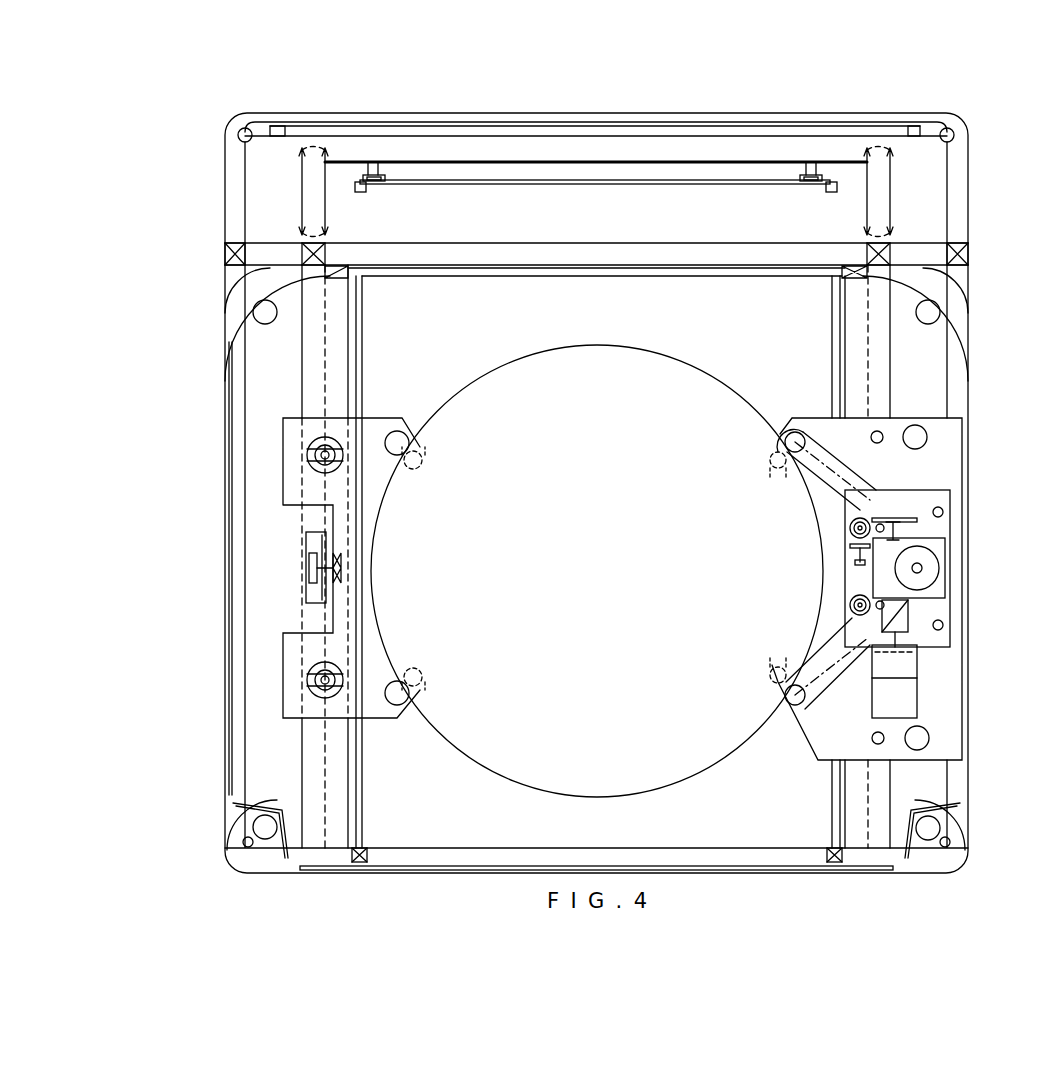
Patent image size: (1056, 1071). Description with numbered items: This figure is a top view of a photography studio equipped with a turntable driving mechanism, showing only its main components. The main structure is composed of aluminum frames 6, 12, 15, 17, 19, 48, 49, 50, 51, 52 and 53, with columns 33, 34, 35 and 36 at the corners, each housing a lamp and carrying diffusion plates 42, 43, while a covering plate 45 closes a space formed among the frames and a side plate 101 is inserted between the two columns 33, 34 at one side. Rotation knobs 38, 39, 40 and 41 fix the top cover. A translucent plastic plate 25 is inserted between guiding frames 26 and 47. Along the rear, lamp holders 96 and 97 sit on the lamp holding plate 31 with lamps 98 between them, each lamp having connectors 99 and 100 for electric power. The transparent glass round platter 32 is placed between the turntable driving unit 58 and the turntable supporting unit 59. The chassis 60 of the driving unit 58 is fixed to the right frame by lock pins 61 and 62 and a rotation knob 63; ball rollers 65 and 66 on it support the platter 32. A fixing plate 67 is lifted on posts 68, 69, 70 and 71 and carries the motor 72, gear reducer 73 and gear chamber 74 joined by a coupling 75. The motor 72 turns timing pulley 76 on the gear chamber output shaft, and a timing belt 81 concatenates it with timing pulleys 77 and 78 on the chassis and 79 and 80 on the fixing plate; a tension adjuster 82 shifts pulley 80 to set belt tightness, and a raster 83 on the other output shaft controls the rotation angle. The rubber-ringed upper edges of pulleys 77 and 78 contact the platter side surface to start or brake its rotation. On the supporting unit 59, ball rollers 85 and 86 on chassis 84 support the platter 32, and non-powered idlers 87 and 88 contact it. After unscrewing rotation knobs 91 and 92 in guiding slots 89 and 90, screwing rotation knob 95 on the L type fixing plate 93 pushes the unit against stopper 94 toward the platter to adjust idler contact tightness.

The aluminum frame 6 is at (745, 858).
The aluminum frame 12 is at (548, 136).
The aluminum frame 15 is at (962, 255).
The aluminum frame 17 is at (878, 208).
The aluminum frame 19 is at (960, 775).
The translucent plastic plate 25 is at (662, 278).
The guiding frame 26 is at (850, 272).
The lamp holding plate 31 is at (641, 162).
The transparent glass round platter 32 is at (697, 398).
The column 33 is at (232, 848).
The column 34 is at (243, 310).
The column 35 is at (960, 848).
The column 36 is at (950, 290).
The rotation knob 38 is at (275, 840).
The rotation knob 39 is at (262, 320).
The rotation knob 40 is at (920, 840).
The rotation knob 41 is at (935, 318).
The diffusion plate 42 is at (278, 810).
The diffusion plate 43 is at (930, 808).
The covering plate 45 is at (486, 126).
The guiding frame 47 is at (340, 272).
The aluminum frame 48 is at (888, 255).
The aluminum frame 49 is at (325, 240).
The aluminum frame 50 is at (235, 255).
The aluminum frame 51 is at (833, 858).
The aluminum frame 52 is at (305, 192).
The aluminum frame 53 is at (365, 858).
The turntable driving unit 58 is at (797, 410).
The turntable supporting unit 59 is at (400, 418).
The chassis 60 is at (940, 755).
The lock pin 61 is at (870, 742).
The lock pin 62 is at (925, 430).
The rotation knob 63 is at (925, 736).
The ball roller 65 is at (768, 675).
The ball roller 66 is at (768, 460).
The fixing plate 67 is at (955, 492).
The post 68 is at (943, 625).
The post 69 is at (943, 512).
The post 70 is at (870, 520).
The post 71 is at (882, 625).
The motor 72 is at (900, 695).
The gear reducer 73 is at (900, 658).
The gear chamber 74 is at (930, 568).
The coupling 75 is at (940, 598).
The timing pulley 76 is at (940, 560).
The timing pulley 77 is at (792, 705).
The timing pulley 78 is at (788, 433).
The timing pulley 79 is at (850, 605).
The timing pulley 80 is at (850, 528).
The timing belt 81 is at (832, 455).
The tension adjuster 82 is at (850, 547).
The raster 83 is at (925, 483).
The chassis 84 is at (395, 720).
The ball roller 85 is at (423, 460).
The ball roller 86 is at (423, 677).
The idler 87 is at (400, 455).
The idler 88 is at (397, 705).
The guiding slot 89 is at (318, 455).
The guiding slot 90 is at (318, 680).
The rotation knob 91 is at (320, 465).
The rotation knob 92 is at (320, 690).
The L type fixing plate 93 is at (312, 595).
The stopper 94 is at (342, 570).
The rotation knob 95 is at (312, 563).
The lamp holder 96 is at (810, 176).
The lamp holder 97 is at (379, 178).
The lamp 98 is at (700, 180).
The connector 99 is at (830, 184).
The connector 100 is at (360, 184).
The side plate 101 is at (230, 530).